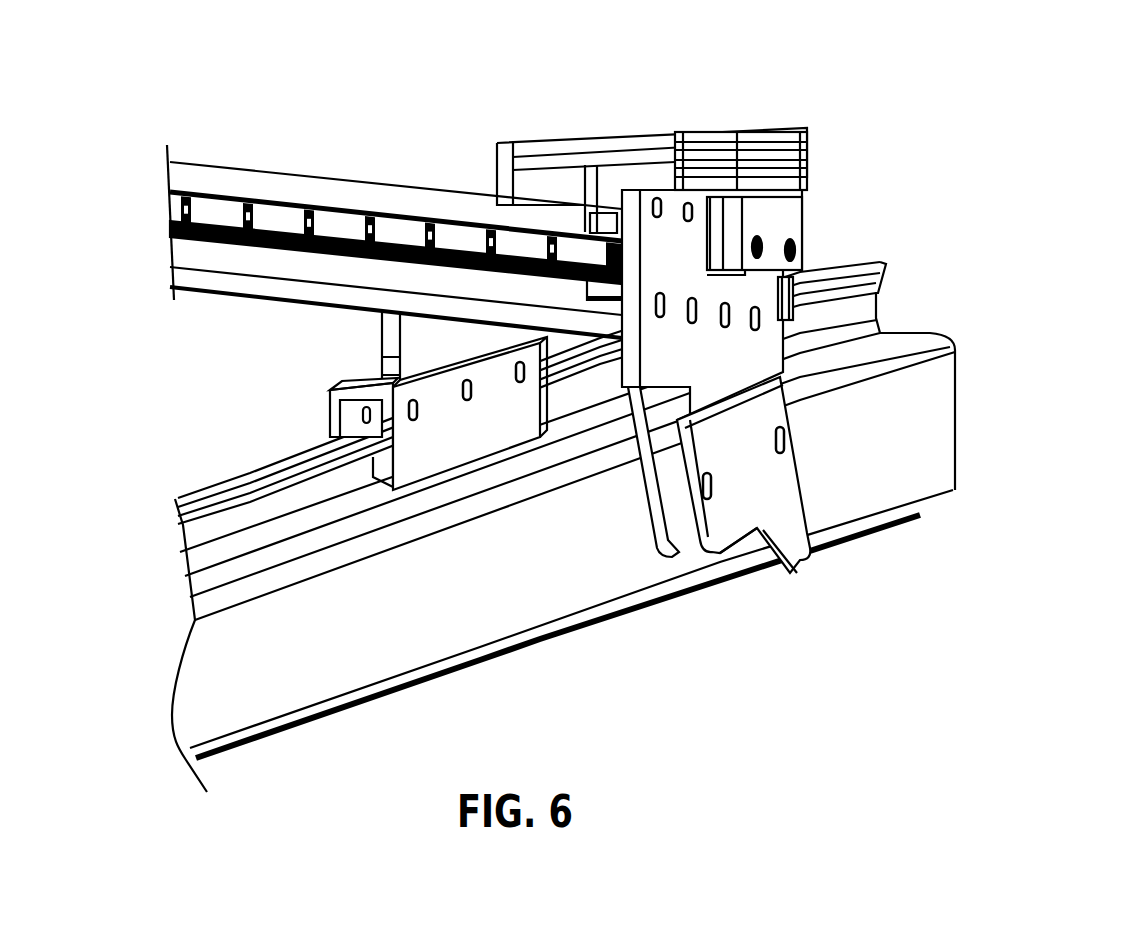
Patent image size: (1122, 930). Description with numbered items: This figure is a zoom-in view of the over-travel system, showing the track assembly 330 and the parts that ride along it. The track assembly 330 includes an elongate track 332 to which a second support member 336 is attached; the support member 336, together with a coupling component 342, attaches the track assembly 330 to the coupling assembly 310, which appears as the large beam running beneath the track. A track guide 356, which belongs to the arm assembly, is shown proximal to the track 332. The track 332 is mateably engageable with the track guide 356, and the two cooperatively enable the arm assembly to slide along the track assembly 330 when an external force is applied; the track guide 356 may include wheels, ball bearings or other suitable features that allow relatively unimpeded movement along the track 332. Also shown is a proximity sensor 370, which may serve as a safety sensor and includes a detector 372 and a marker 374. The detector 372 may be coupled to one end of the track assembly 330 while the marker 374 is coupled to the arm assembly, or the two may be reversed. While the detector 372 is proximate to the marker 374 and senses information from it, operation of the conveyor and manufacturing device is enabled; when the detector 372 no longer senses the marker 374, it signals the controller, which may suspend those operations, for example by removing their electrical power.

The coupling assembly 310 is at (958, 460).
The track assembly 330 is at (358, 120).
The track 332 is at (455, 215).
The second support member 336 is at (378, 351).
The coupling component 342 is at (330, 425).
The track guide 356 is at (595, 195).
The proximity sensor 370 is at (900, 182).
The detector 372 is at (800, 175).
The marker 374 is at (800, 220).